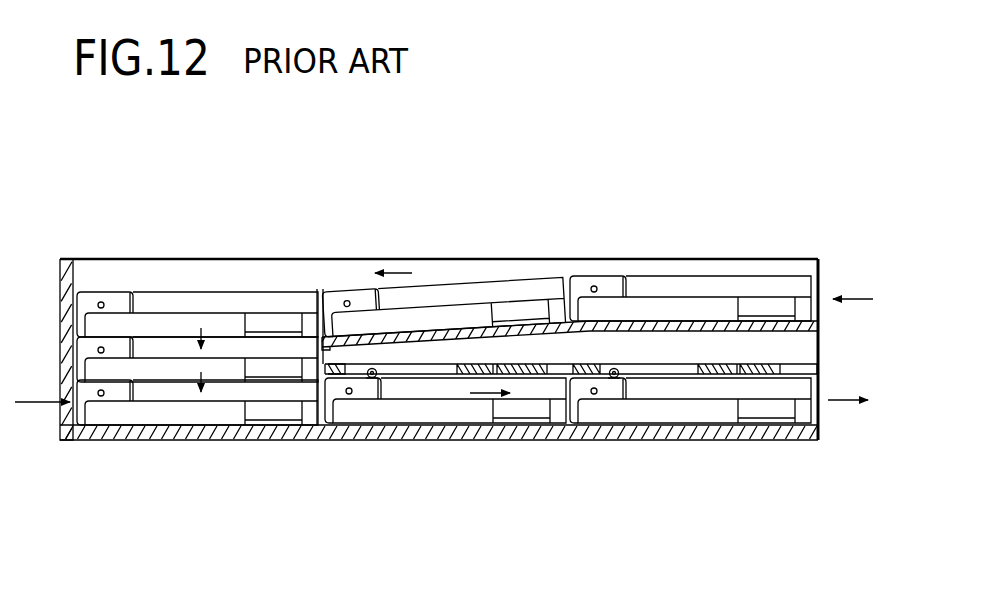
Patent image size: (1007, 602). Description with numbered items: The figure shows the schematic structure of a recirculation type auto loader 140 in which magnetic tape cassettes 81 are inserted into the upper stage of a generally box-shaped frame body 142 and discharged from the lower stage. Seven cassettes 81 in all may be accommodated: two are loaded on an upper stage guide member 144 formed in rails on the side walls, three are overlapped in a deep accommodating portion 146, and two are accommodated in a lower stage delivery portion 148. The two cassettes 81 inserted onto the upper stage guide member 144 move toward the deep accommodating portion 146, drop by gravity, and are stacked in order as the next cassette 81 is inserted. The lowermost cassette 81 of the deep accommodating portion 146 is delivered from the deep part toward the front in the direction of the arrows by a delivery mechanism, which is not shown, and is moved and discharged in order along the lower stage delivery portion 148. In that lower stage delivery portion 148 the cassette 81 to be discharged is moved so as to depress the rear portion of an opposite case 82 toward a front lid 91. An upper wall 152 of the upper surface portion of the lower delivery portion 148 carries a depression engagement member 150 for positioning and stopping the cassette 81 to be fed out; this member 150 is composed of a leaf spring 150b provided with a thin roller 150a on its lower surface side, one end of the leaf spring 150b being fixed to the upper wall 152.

The auto loader 140 is at (768, 177).
The frame body 142 is at (66, 288).
The upper stage guide member 144 is at (615, 318).
The deep accommodating portion 146 is at (193, 278).
The lower stage delivery portion 148 is at (660, 437).
The depression engagement member 150 is at (422, 362).
The thin roller 150a is at (372, 378).
The leaf spring 150b is at (435, 374).
The upper wall 152 is at (782, 364).
The magnetic tape cassette 81 is at (267, 300).
The opposite case 82 is at (428, 397).
The front lid 91 is at (337, 393).